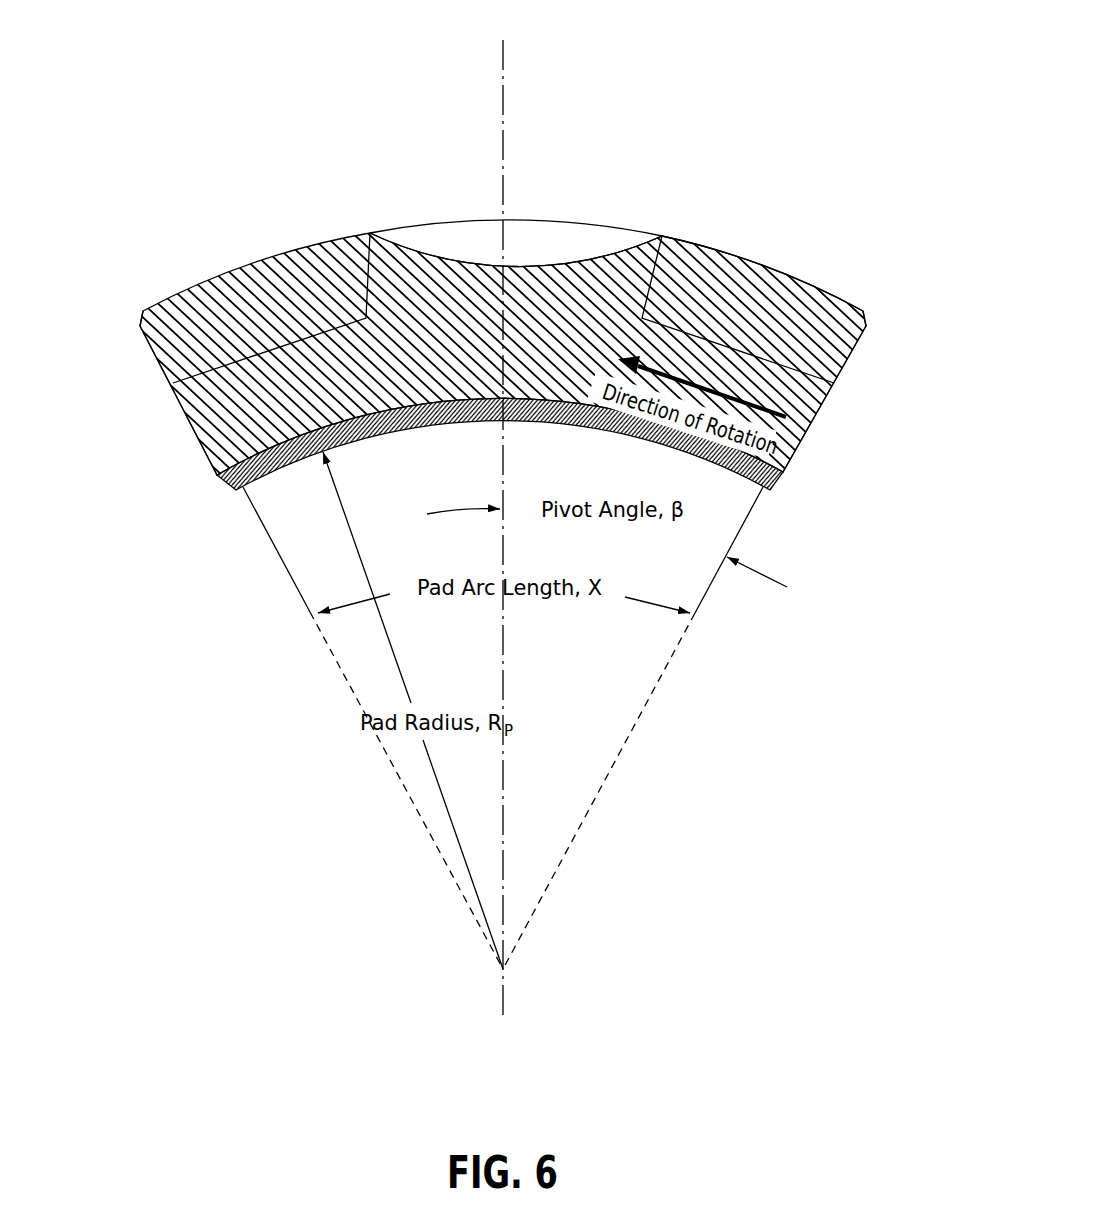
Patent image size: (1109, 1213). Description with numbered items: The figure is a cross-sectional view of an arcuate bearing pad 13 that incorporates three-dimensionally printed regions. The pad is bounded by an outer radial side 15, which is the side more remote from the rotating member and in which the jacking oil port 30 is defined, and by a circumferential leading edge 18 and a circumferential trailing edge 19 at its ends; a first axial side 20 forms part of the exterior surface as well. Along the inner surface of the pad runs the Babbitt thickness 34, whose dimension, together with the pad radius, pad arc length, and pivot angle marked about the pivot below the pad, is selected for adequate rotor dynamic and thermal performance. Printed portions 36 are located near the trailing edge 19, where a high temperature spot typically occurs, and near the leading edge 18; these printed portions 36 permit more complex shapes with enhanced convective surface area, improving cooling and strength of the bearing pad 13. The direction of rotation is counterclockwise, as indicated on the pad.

The bearing pad 13 is at (706, 128).
The outer radial side 15 is at (312, 247).
The circumferential leading edge 18 is at (826, 413).
The circumferential trailing edge 19 is at (183, 413).
The first axial side 20 is at (602, 275).
The jacking oil port 30 is at (454, 245).
The Babbitt thickness 34 is at (772, 483).
The printed portion 36 is at (203, 283).